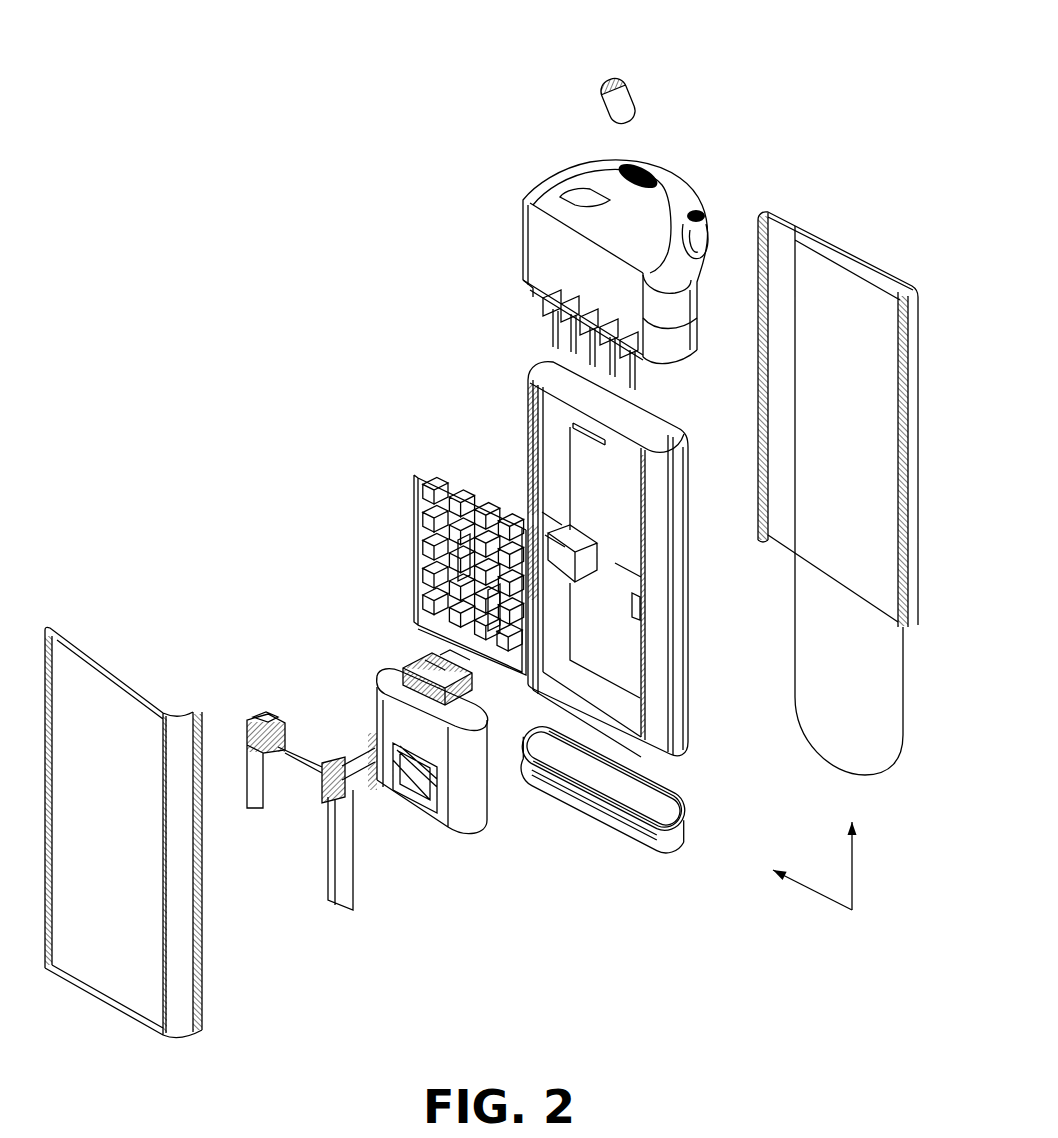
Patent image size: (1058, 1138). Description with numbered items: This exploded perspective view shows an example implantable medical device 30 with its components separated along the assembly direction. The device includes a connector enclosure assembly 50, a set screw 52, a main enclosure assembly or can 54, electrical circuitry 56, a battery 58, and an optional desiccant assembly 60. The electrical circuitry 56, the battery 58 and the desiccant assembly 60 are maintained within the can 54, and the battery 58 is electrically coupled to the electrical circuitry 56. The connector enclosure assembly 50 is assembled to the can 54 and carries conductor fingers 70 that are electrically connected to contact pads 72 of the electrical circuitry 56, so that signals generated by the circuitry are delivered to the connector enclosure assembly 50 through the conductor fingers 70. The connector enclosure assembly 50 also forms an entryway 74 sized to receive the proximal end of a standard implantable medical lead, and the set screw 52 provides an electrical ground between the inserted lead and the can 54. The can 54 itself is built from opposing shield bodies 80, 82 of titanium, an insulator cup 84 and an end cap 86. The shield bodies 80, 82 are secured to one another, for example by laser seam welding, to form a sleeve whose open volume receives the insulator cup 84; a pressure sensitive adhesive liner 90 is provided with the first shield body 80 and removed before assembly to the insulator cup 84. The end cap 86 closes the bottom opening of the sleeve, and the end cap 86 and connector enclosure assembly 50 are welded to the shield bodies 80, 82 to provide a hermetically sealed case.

The implantable medical device 30 is at (324, 80).
The connector enclosure assembly 50 is at (582, 267).
The set screw 52 is at (642, 102).
The main enclosure assembly or can 54 is at (826, 881).
The electrical circuitry 56 is at (416, 537).
The battery 58 is at (469, 802).
The desiccant assembly 60 is at (245, 715).
The conductor fingers 70 is at (645, 354).
The contact pads 72 is at (463, 486).
The entryway 74 is at (695, 215).
The first shield body 80 is at (861, 467).
The second shield body 82 is at (88, 951).
The insulator cup 84 is at (686, 648).
The end cap 86 is at (696, 821).
The pressure sensitive adhesive liner 90 is at (870, 700).